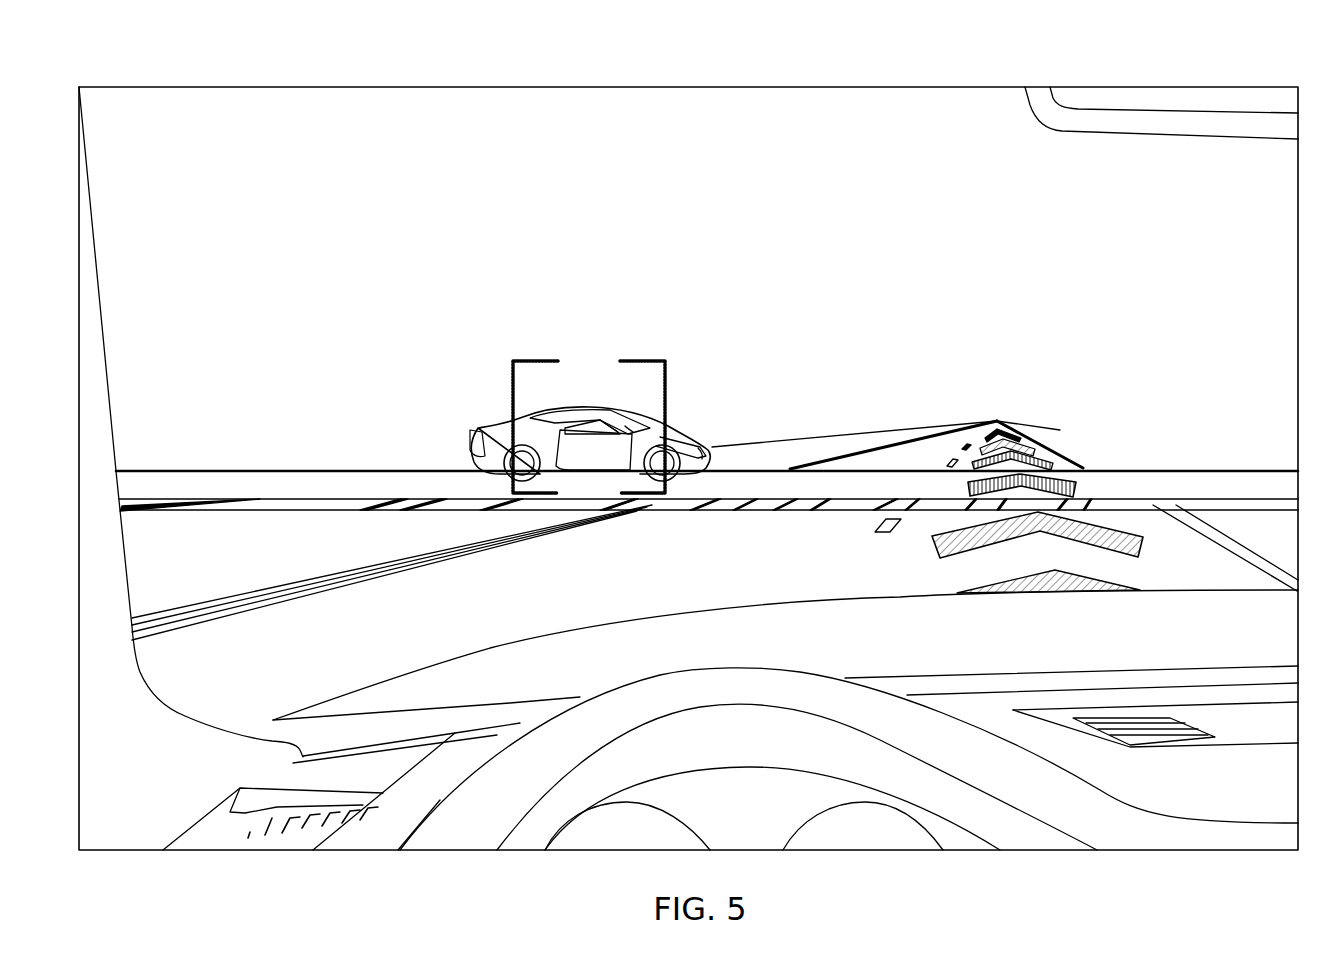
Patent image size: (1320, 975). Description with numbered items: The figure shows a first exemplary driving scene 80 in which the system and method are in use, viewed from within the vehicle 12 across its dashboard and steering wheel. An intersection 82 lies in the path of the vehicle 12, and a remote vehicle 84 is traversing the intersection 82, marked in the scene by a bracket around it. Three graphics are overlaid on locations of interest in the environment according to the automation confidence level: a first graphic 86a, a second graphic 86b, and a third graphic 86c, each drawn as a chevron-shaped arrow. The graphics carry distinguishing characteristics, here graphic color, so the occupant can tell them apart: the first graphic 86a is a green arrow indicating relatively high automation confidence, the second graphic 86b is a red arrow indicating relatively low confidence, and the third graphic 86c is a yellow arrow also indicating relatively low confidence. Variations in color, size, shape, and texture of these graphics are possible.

The first exemplary driving scene 80 is at (108, 80).
The intersection 82 is at (887, 485).
The remote vehicle 84 is at (585, 406).
The first graphic 86a is at (1147, 548).
The second graphic 86b is at (1048, 460).
The third graphic 86c is at (1080, 492).
The vehicle 12 is at (503, 678).